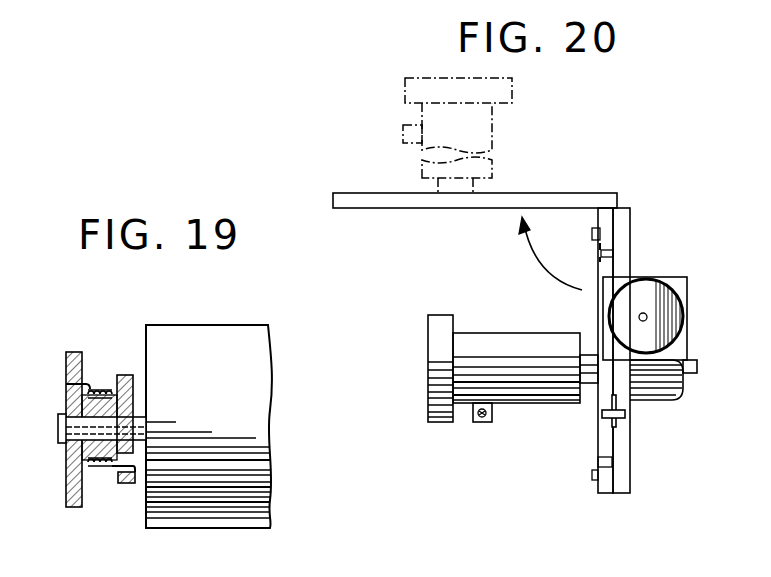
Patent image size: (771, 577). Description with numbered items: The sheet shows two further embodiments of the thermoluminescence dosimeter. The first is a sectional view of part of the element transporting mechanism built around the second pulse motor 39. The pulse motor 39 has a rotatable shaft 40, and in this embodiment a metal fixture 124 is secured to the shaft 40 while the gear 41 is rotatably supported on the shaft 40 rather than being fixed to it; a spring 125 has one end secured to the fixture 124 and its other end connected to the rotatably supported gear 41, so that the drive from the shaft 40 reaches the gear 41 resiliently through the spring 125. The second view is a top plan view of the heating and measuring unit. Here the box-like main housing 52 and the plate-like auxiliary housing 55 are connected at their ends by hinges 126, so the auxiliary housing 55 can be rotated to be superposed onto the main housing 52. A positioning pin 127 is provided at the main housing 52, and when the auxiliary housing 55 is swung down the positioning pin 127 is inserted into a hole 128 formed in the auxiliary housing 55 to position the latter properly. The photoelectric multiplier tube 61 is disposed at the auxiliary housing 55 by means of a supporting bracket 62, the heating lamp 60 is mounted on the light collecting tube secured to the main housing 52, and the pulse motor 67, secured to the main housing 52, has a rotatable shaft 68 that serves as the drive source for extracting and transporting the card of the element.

In FIG. 19, the pulse motor 39 is at (193, 325).
In FIG. 19, the rotatable shaft 40 is at (67, 457).
In FIG. 19, the gear 41 is at (80, 487).
In FIG. 19, the fixture 124 is at (127, 375).
In FIG. 19, the spring 125 is at (99, 390).
In FIG. 20, the hinges 126 is at (620, 204).
In FIG. 20, the positioning pin 127 is at (603, 256).
In FIG. 20, the hole 128 is at (606, 263).
In FIG. 20, the photoelectric multiplier tube 61 is at (478, 342).
In FIG. 20, the supporting bracket 62 is at (482, 424).
In FIG. 20, the pulse motor 67 is at (675, 315).
In FIG. 20, the rotatable shaft 68 is at (643, 313).
In FIG. 20, the heating lamp 60 is at (677, 387).
In FIG. 20, the auxiliary housing 55 is at (605, 494).
In FIG. 20, the main housing 52 is at (624, 494).